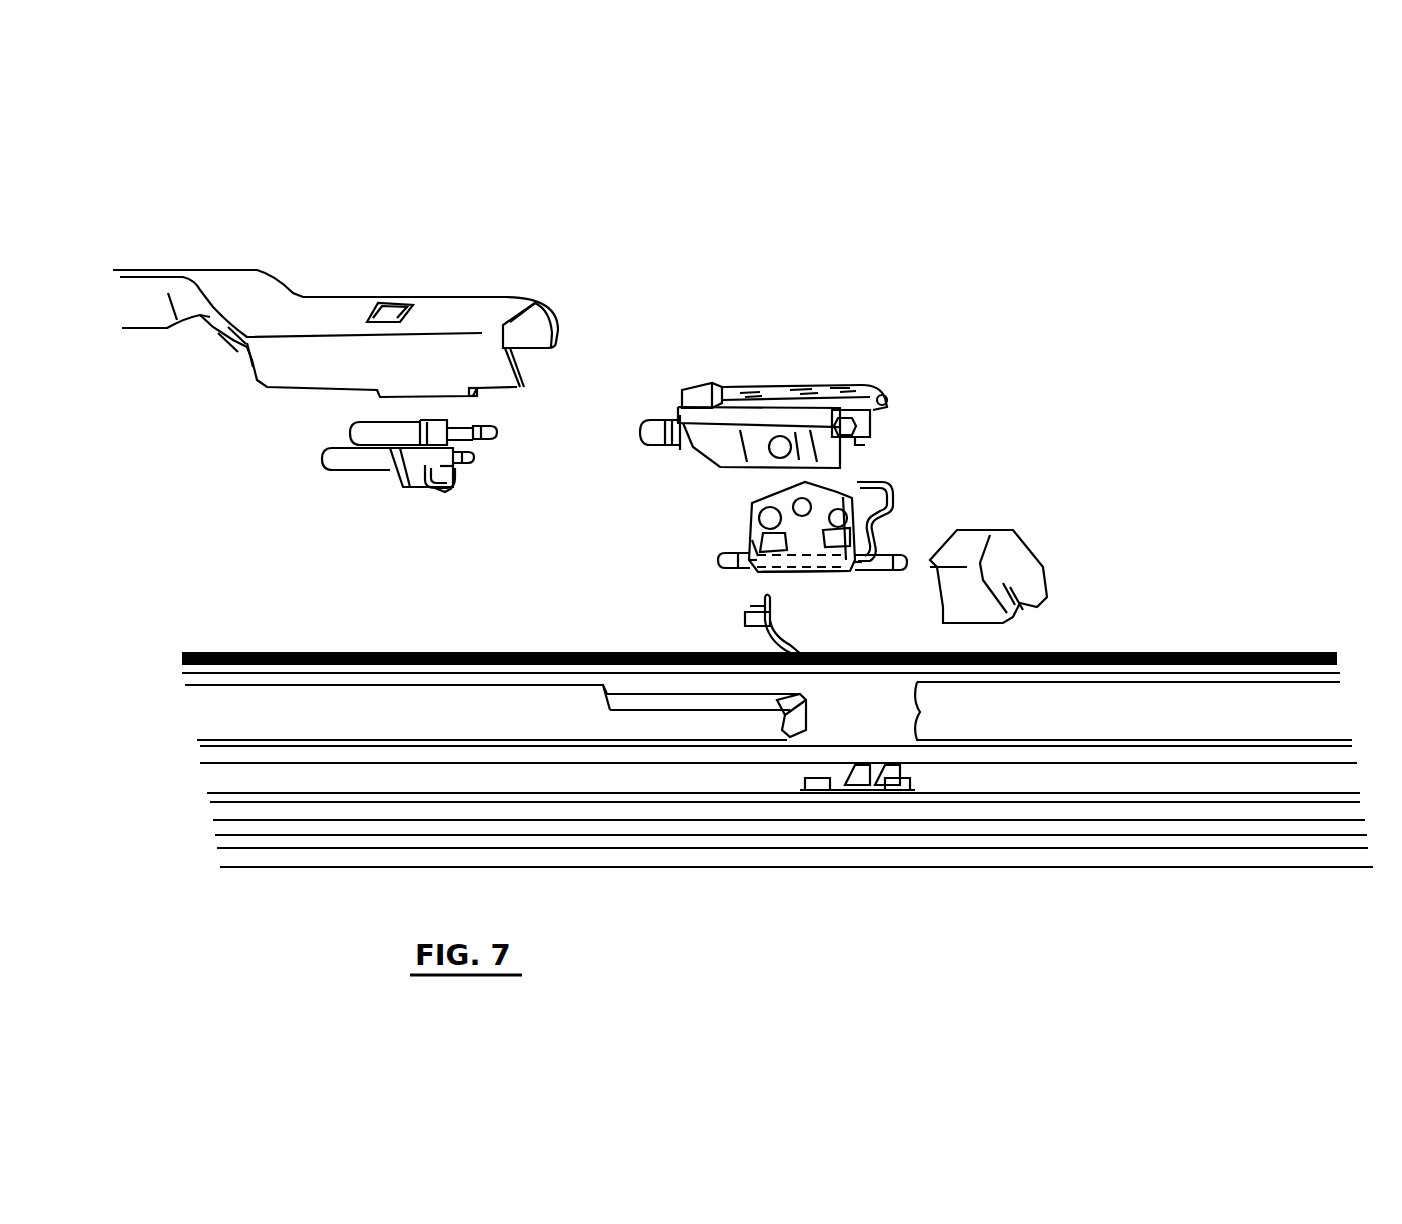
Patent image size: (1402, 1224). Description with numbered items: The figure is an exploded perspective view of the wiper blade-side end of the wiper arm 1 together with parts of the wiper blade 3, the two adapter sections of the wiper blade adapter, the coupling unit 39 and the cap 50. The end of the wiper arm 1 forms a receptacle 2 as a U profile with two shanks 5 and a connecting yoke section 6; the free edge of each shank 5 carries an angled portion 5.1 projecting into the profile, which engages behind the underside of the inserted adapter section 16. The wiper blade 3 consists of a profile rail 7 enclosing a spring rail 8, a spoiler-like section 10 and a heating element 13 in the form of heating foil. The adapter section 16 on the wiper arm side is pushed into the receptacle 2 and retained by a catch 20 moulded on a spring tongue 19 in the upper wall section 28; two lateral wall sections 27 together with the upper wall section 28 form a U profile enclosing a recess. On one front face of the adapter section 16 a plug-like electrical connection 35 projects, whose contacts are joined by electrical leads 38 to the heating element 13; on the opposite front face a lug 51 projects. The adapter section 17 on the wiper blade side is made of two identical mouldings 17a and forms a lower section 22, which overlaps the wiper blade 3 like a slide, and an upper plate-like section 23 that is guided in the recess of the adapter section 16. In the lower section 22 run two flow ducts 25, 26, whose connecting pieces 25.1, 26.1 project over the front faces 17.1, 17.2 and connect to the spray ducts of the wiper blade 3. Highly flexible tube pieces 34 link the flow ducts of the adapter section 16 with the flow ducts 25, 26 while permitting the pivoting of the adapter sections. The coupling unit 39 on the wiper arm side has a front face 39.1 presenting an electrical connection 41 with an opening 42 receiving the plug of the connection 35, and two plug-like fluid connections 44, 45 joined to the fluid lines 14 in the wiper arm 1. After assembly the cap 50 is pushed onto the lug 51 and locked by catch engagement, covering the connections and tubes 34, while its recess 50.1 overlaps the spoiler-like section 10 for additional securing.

The wiper arm 1 is at (348, 279).
The receptacle 2 is at (510, 288).
The wiper blade 3 is at (1064, 872).
The shank 5 is at (535, 322).
The angled portion 5.1 is at (462, 385).
The yoke section 6 is at (310, 307).
The profile rail 7 is at (992, 780).
The spring rail 8 is at (855, 793).
The spoiler-like section 10 is at (383, 718).
The heating element 13 is at (1143, 652).
The fluid lines 14 is at (350, 430).
The adapter section on the wiper arm side 16 is at (794, 354).
The adapter section on the wiper blade side 17 is at (903, 470).
The mouldings 17a is at (706, 515).
The front face 17.1 is at (760, 563).
The front face 17.2 is at (870, 574).
The spring tongue 19 is at (747, 397).
The catch 20 is at (697, 382).
The lower section 22 is at (827, 575).
The plate-like section 23 is at (758, 520).
The flow duct 25 is at (762, 577).
The flow duct 26 is at (735, 609).
The connecting piece 25.1 is at (720, 560).
The connecting piece 26.1 is at (925, 493).
The wall section 27 is at (703, 450).
The upper wall section 28 is at (793, 390).
The flexible tube piece 34 is at (905, 558).
The electrical connection 35 is at (652, 408).
The electrical lead 38 is at (823, 668).
The coupling unit 39 is at (432, 518).
The front face 39.1 is at (443, 490).
The electrical connection 41 is at (460, 500).
The opening 42 is at (450, 486).
The fluid connection 44 is at (474, 458).
The fluid connection 45 is at (497, 433).
The cap 50 is at (987, 533).
The recess 50.1 is at (1023, 607).
The lug 51 is at (882, 402).